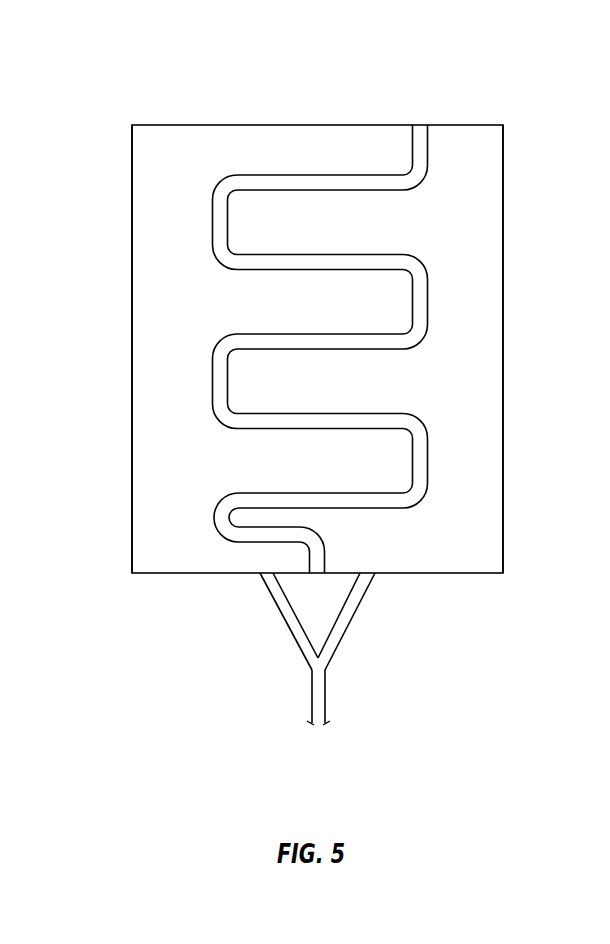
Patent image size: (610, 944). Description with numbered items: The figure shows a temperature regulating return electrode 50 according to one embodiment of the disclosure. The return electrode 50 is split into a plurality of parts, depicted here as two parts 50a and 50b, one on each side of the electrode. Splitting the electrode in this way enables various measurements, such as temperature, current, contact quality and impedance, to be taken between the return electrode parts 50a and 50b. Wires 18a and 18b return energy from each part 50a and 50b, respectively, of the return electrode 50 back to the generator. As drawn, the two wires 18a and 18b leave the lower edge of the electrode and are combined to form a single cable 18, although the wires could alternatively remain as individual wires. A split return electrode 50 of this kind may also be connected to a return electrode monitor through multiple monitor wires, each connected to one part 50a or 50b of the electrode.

The return electrode 50 is at (490, 88).
The first part of return electrode 50a is at (132, 369).
The second part of return electrode 50b is at (503, 368).
The single cable 18 is at (321, 649).
The wire 18a is at (290, 630).
The wire 18b is at (348, 628).